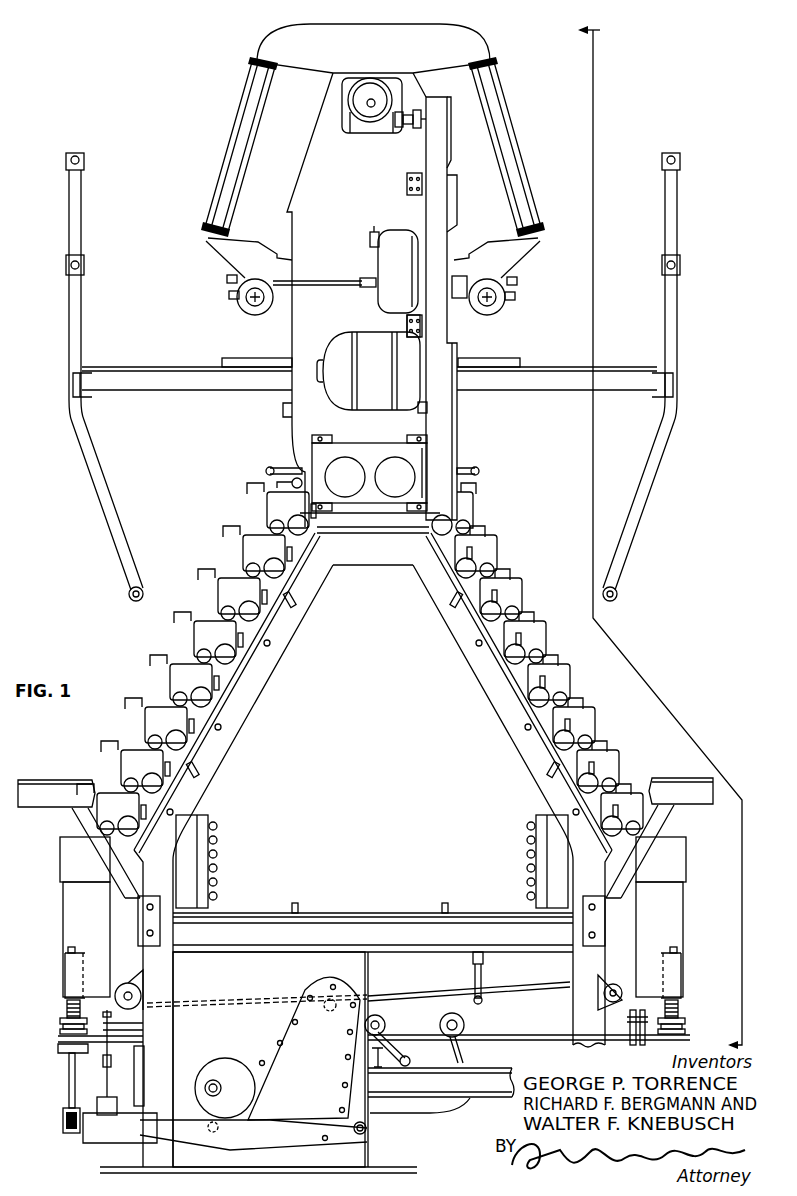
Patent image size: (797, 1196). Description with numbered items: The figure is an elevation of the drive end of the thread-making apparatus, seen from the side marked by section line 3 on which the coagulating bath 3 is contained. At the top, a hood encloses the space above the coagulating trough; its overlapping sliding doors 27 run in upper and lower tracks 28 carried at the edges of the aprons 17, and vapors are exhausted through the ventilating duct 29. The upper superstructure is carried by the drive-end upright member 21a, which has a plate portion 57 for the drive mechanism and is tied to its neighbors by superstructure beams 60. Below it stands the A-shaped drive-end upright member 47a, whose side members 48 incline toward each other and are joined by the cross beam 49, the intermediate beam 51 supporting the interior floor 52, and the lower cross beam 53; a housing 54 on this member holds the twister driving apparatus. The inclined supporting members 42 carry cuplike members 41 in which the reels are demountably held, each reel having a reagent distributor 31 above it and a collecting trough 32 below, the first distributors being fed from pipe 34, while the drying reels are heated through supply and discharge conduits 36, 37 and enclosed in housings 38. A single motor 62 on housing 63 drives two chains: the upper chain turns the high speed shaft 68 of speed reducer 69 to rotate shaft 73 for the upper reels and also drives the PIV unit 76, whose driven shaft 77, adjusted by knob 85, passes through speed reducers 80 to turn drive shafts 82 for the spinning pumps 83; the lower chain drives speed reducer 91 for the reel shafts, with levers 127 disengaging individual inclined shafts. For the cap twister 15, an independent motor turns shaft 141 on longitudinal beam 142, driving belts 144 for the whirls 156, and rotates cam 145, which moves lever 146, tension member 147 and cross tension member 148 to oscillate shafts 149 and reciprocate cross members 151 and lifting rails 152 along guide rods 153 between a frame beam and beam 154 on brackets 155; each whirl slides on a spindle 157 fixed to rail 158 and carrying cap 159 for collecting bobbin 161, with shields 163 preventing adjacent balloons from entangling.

The coagulating bath 3 is at (667, 535).
The cap twister 15 is at (62, 953).
The aprons 17 is at (253, 235).
The drive-end upright member 21a is at (312, 130).
The sliding doors 27 is at (240, 145).
The upper and lower tracks 28 is at (252, 60).
The ventilating duct 29 is at (364, 58).
The reagent distributor 31 is at (262, 488).
The collecting trough 32 is at (266, 514).
The pipe 34 is at (296, 478).
The supply conduit 36 is at (215, 824).
The discharge conduit 37 is at (218, 896).
The housings 38 is at (60, 853).
The cuplike members 41 is at (262, 613).
The inclined supporting member 42 is at (198, 750).
The drive-end upright member 47a is at (568, 965).
The side members 48 is at (262, 694).
The cross beam 49 is at (365, 567).
The intermediate beam 51 is at (376, 930).
The interior floor 52 is at (318, 912).
The lower cross beam 53 is at (495, 1082).
The housing 54 is at (262, 972).
The plate portion 57 is at (329, 216).
The superstructure beams 60 is at (283, 408).
The motor 62 is at (374, 389).
The housing 63 is at (426, 210).
The high speed shaft 68 is at (402, 130).
The speed reducer 69 is at (366, 128).
The shaft 73 is at (374, 99).
The PIV unit 76 is at (390, 300).
The driven shaft 77 is at (312, 290).
The speed reducer 80 is at (248, 312).
The drive shafts 82 is at (256, 307).
The spinning pumps 83 is at (228, 290).
The knob 85 is at (370, 240).
The speed reducer 91 is at (375, 450).
The lever 127 is at (270, 468).
The shaft 141 is at (328, 1000).
The longitudinal beam 142 is at (380, 1062).
The belts 144 is at (60, 1043).
The cam 145 is at (237, 1063).
The lever 146 is at (262, 1140).
The tension member 147 is at (145, 1046).
The cross tension member 148 is at (427, 994).
The shafts 149 is at (128, 983).
The cross member 151 is at (393, 1103).
The lifting rails 152 is at (64, 1054).
The guide rods 153 is at (106, 1090).
The beam 154 is at (107, 1114).
The brackets 155 is at (110, 1143).
The whirl 156 is at (60, 1027).
The spindle 157 is at (68, 1100).
The fixed rail 158 is at (78, 1132).
The cap 159 is at (63, 980).
The collecting bobbin 161 is at (64, 1011).
The shields 163 is at (63, 907).